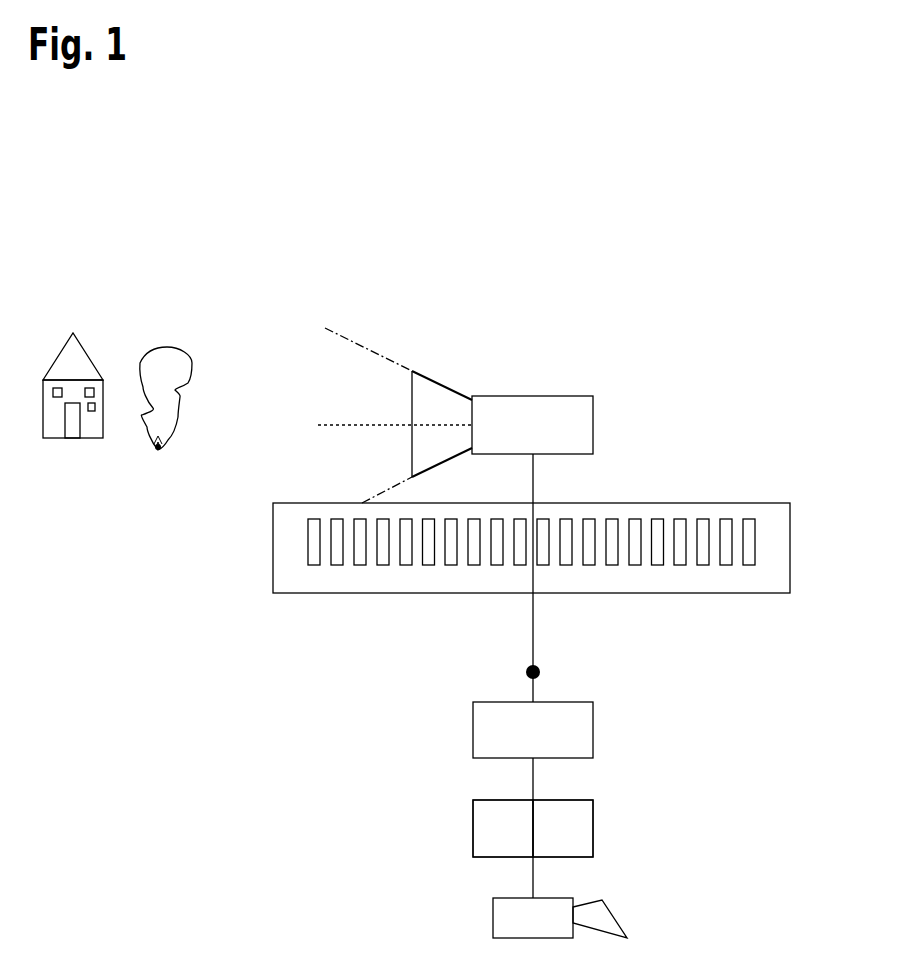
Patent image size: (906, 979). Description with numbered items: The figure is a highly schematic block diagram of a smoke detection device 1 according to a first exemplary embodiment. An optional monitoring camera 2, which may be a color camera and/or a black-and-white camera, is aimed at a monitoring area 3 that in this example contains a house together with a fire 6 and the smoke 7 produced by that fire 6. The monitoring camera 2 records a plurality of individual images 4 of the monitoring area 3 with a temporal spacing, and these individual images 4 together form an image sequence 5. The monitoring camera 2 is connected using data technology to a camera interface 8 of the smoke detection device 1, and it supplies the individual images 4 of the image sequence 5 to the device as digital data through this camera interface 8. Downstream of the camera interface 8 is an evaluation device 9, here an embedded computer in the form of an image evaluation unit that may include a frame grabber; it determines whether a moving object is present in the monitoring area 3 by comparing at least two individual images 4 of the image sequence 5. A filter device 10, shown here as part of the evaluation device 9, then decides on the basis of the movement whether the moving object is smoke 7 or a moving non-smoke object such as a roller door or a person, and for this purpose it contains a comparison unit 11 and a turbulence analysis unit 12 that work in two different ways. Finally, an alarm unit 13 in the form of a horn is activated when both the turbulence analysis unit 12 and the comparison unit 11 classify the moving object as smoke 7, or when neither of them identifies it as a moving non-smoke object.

The smoke detection device 1 is at (702, 284).
The monitoring camera 2 is at (595, 375).
The monitoring area 3 is at (118, 310).
The individual images 4 is at (314, 565).
The image sequence 5 is at (773, 562).
The fire 6 is at (157, 461).
The smoke 7 is at (192, 335).
The camera interface 8 is at (550, 673).
The evaluation device 9 is at (603, 733).
The filter device 10 is at (603, 809).
The comparison unit 11 is at (572, 835).
The turbulence analysis unit 12 is at (495, 835).
The alarm unit 13 is at (513, 915).